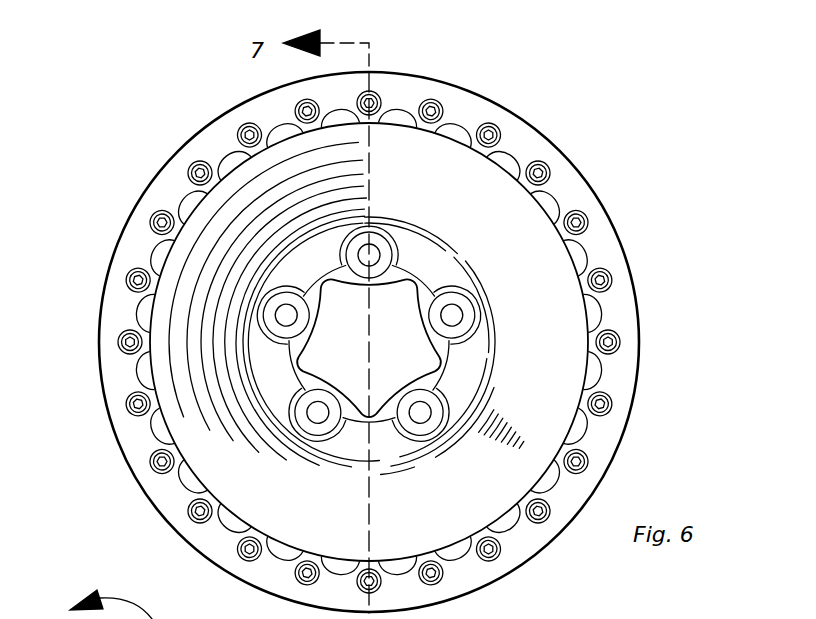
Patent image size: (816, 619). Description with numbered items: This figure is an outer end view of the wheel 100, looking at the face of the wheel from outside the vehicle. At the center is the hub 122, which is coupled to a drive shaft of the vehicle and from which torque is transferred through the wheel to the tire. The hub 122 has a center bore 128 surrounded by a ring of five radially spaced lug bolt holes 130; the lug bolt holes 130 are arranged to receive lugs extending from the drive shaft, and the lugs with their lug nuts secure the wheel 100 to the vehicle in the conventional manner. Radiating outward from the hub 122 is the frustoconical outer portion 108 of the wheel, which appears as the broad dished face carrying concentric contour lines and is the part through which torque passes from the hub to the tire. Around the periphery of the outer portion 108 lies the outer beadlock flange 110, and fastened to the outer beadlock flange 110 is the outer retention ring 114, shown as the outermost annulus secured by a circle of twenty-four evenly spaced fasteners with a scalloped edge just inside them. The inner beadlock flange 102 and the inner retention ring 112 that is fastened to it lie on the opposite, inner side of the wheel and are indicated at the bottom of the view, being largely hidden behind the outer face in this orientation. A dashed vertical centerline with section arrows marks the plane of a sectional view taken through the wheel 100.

The wheel 100 is at (618, 70).
The inner beadlock flange 102 is at (571, 618).
The outer portion 108 is at (502, 216).
The outer beadlock flange 110 is at (565, 265).
The inner retention ring 112 is at (711, 613).
The outer retention ring 114 is at (608, 236).
The hub 122 is at (303, 260).
The center bore 128 is at (302, 358).
The lug bolt holes 130 is at (451, 318).